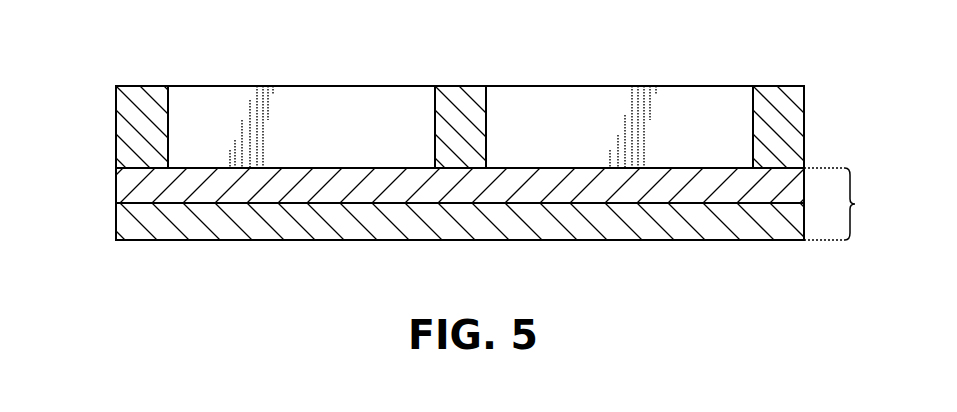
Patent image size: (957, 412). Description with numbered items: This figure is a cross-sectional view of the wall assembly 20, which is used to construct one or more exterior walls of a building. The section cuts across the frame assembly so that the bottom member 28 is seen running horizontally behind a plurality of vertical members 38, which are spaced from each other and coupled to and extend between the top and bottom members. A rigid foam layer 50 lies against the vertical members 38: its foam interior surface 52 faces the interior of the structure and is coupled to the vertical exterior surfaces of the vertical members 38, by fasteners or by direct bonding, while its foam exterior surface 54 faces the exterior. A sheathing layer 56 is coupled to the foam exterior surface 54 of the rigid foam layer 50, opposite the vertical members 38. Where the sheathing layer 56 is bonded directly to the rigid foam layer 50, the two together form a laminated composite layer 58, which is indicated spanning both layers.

The wall assembly 20 is at (808, 60).
The bottom member 28 is at (238, 100).
The vertical members 38 is at (124, 116).
The rigid foam layer 50 is at (603, 185).
The foam interior surface 52 is at (577, 166).
The foam exterior surface 54 is at (660, 207).
The sheathing layer 56 is at (712, 225).
The laminated composite layer 58 is at (501, 204).